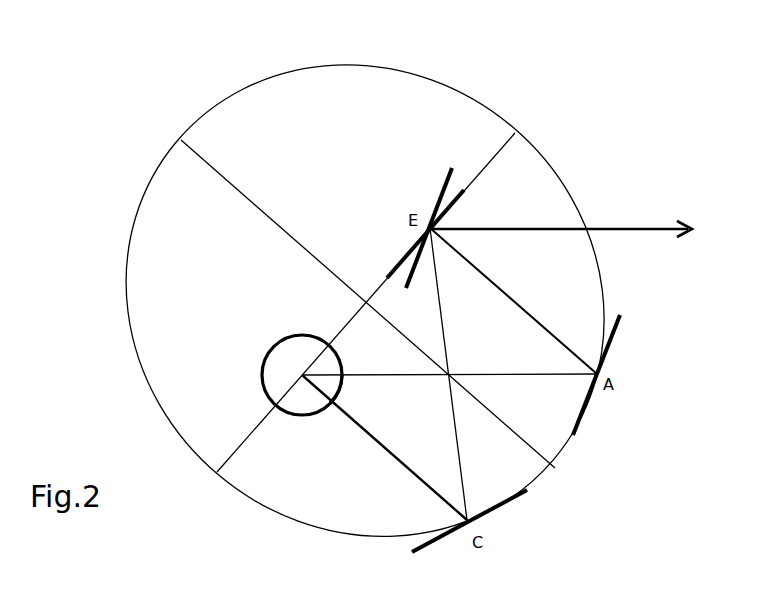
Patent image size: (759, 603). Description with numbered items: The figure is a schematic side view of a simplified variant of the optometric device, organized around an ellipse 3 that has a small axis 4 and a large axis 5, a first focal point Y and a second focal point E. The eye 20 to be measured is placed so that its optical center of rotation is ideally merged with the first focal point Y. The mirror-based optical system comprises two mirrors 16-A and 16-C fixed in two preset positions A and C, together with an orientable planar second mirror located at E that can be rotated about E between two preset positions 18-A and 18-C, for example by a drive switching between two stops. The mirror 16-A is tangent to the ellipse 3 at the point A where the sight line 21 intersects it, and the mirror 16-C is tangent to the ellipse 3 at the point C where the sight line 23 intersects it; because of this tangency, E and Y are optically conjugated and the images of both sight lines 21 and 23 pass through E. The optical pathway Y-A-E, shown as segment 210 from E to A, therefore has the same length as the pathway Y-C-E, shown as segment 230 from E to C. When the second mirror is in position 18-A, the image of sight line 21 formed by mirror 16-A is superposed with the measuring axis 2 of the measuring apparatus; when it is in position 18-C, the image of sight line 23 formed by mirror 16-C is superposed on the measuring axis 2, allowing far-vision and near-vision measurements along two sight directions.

The measuring axis 2 is at (632, 228).
The ellipse 3 is at (283, 72).
The small axis 4 is at (195, 150).
The large axis 5 is at (243, 443).
The eye 20 is at (260, 367).
The sight line 21 is at (352, 368).
The sight line 23 is at (350, 422).
The segment E-A 210 is at (573, 358).
The segment E-C 230 is at (458, 470).
The mirror 16-A is at (612, 342).
The mirror 16-C is at (433, 545).
The first position of second mirror 18-A is at (448, 187).
The second position of second mirror 18-C is at (465, 180).